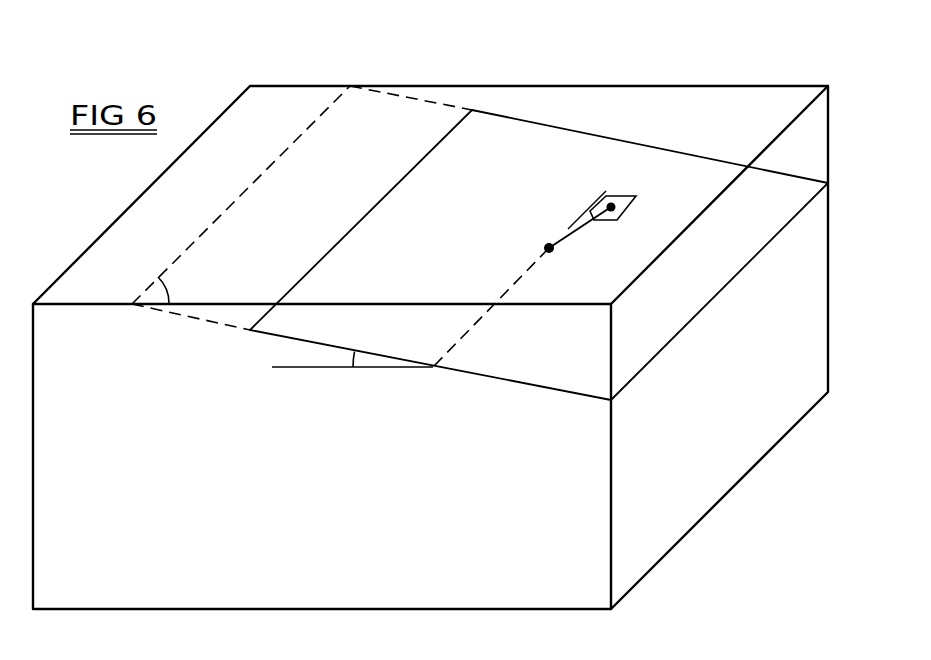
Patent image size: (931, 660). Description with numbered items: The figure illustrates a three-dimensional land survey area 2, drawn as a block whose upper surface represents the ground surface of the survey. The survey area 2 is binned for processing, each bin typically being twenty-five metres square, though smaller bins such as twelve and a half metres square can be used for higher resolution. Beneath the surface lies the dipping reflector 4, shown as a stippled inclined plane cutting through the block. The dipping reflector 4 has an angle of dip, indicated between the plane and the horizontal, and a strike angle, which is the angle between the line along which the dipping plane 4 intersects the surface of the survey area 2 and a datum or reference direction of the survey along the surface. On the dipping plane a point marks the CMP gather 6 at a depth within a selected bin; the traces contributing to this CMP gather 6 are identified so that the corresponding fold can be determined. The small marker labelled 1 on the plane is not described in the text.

The survey area 2 is at (740, 122).
The dipping reflector 4 is at (548, 390).
The CMP gather 6 is at (549, 248).
The transducer element 1 is at (621, 196).